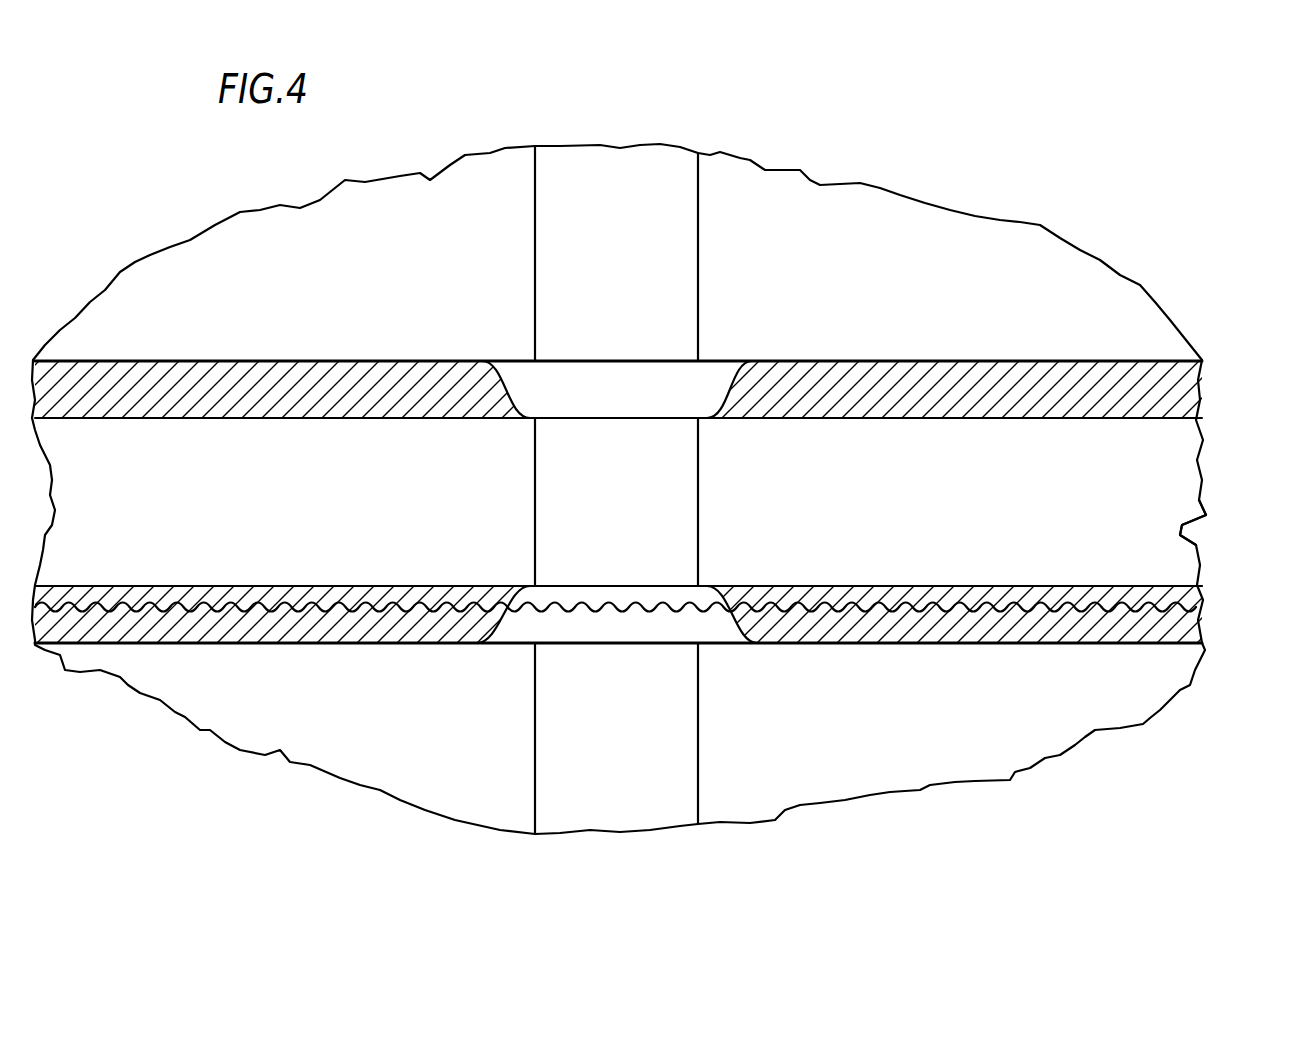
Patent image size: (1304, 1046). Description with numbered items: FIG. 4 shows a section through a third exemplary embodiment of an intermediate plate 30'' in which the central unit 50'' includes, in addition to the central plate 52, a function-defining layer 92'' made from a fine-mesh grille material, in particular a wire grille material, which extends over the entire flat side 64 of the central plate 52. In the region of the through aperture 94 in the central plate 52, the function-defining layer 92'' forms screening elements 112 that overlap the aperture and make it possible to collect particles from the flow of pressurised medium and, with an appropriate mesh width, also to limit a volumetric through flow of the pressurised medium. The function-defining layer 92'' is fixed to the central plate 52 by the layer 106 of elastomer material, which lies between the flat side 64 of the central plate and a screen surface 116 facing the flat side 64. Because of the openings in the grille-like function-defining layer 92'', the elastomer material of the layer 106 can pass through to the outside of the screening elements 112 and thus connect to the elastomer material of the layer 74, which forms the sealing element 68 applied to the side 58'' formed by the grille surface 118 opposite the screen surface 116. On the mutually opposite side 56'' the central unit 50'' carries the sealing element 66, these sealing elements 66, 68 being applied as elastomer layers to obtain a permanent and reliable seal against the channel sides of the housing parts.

The fluid injection assembly 30'' is at (619, 486).
The central unit 50'' is at (1001, 488).
The central plate 52 is at (1168, 511).
The side of the central unit 56'' is at (618, 350).
The side of the central unit 58'' is at (472, 654).
The flat side of the central plate 64 is at (1042, 600).
The sealing element 66 is at (878, 383).
The sealing element 68 is at (800, 617).
The layer of elastomer material 74 is at (940, 630).
The function-defining layer 92'' is at (662, 621).
The through aperture 94 is at (535, 500).
The layer of elastomer material 106 is at (862, 595).
The screening elements 112 is at (610, 607).
The screen surface 116 is at (925, 600).
The grille surface 118 is at (1030, 610).